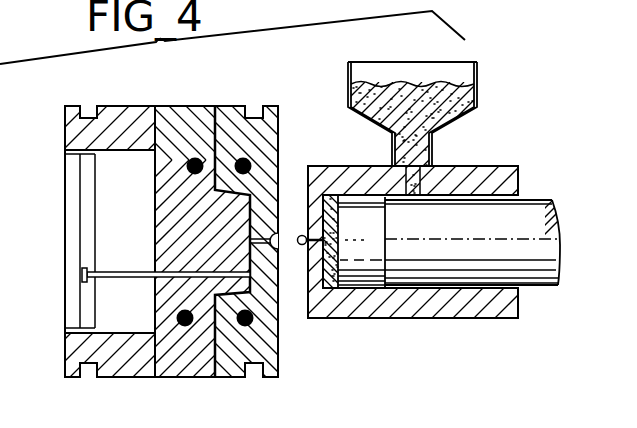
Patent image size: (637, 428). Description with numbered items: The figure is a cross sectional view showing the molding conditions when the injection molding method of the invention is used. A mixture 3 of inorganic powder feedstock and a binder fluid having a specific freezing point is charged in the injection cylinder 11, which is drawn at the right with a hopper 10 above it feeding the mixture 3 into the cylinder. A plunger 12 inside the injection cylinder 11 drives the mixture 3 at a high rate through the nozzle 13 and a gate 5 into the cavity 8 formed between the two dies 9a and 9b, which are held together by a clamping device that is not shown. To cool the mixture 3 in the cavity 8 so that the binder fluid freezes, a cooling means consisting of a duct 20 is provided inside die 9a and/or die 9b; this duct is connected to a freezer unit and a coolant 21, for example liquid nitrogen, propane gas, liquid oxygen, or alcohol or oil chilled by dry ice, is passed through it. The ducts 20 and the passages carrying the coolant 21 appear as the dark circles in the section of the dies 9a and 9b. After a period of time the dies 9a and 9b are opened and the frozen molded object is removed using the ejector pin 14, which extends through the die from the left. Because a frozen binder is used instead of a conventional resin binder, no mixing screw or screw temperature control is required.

The mixture 3 is at (413, 114).
The gate 5 is at (279, 238).
The cavity 8 is at (303, 120).
The die 9a is at (199, 134).
The die 9b is at (231, 134).
The hopper 10 is at (480, 88).
The injection cylinder 11 is at (497, 183).
The plunger 12 is at (538, 267).
The nozzle 13 is at (303, 246).
The ejector pin 14 is at (117, 270).
The duct 20 is at (182, 327).
The coolant 21 is at (191, 159).